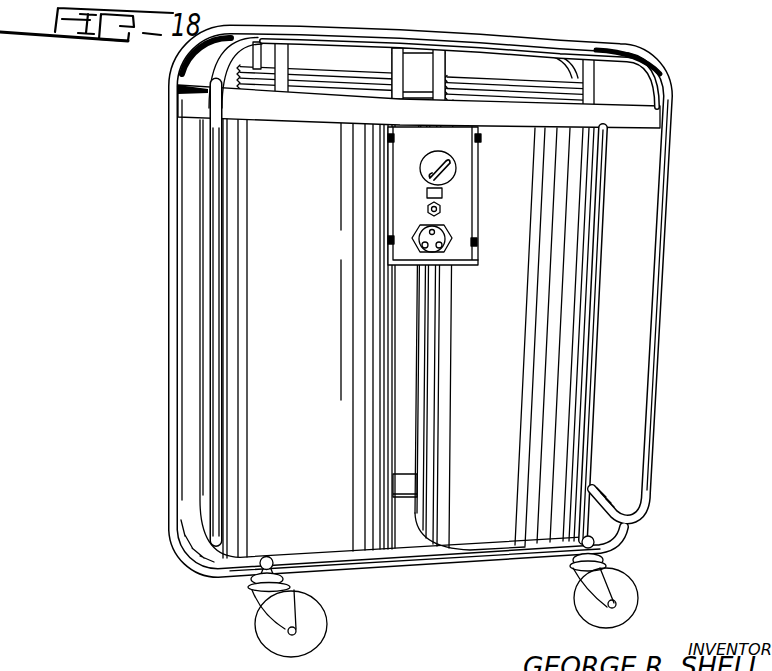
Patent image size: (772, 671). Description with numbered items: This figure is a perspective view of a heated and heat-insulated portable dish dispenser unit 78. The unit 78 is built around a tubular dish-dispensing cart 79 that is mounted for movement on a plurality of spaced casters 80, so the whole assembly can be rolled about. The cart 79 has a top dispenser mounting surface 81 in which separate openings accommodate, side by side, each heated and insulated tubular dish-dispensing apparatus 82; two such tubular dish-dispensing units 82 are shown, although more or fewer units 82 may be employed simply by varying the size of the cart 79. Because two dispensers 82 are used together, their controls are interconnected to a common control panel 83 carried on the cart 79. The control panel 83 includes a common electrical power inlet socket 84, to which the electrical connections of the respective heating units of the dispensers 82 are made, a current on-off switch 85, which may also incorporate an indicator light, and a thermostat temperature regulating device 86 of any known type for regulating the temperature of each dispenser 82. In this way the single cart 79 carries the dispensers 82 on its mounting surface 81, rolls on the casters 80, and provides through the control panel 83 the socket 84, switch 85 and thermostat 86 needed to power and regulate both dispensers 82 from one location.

The portable dish dispenser unit 78 is at (677, 242).
The tubular dish-dispensing cart 79 is at (668, 157).
The casters 80 is at (315, 621).
The top dispenser mounting surface 81 is at (640, 111).
The tubular dish-dispensing apparatus 82 is at (298, 349).
The common control panel 83 is at (474, 251).
The electrical power inlet socket 84 is at (437, 256).
The current on-off switch 85 is at (443, 207).
The thermostat temperature regulating device 86 is at (421, 164).